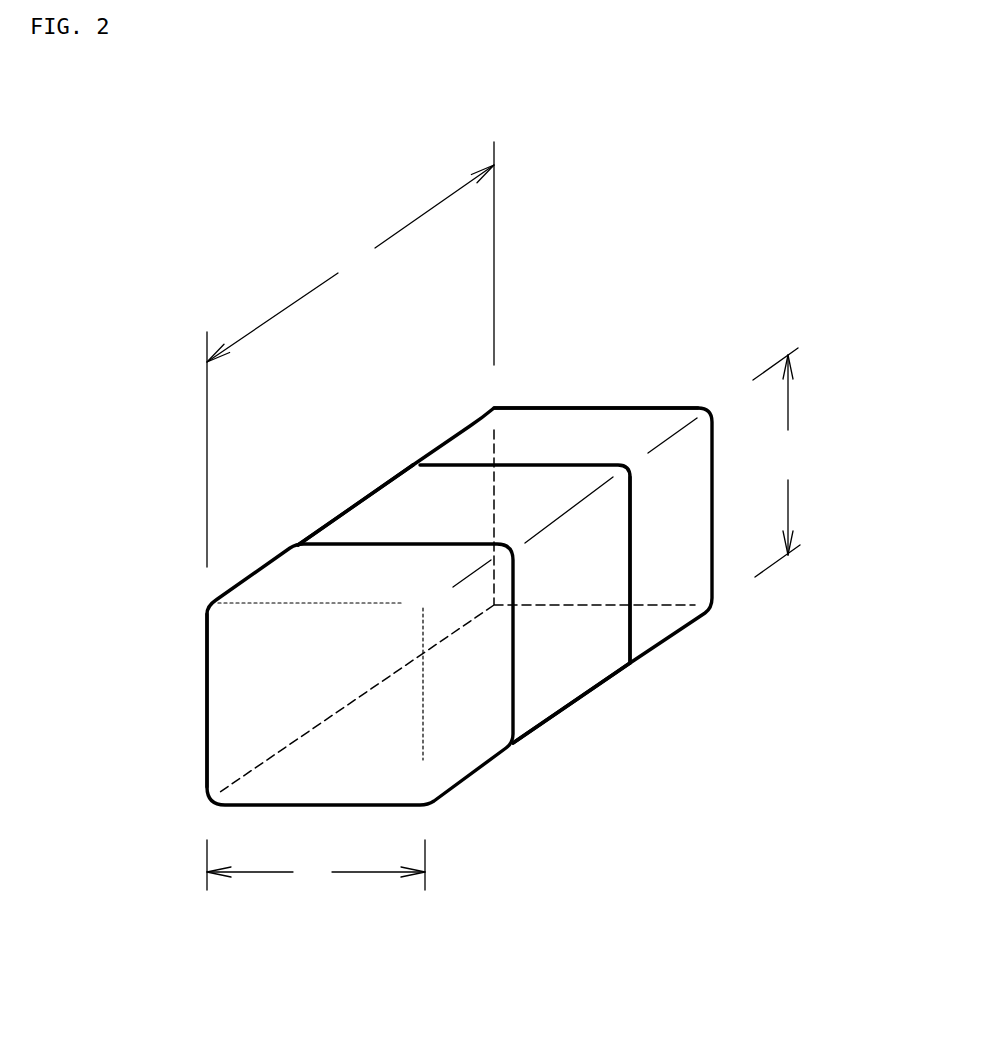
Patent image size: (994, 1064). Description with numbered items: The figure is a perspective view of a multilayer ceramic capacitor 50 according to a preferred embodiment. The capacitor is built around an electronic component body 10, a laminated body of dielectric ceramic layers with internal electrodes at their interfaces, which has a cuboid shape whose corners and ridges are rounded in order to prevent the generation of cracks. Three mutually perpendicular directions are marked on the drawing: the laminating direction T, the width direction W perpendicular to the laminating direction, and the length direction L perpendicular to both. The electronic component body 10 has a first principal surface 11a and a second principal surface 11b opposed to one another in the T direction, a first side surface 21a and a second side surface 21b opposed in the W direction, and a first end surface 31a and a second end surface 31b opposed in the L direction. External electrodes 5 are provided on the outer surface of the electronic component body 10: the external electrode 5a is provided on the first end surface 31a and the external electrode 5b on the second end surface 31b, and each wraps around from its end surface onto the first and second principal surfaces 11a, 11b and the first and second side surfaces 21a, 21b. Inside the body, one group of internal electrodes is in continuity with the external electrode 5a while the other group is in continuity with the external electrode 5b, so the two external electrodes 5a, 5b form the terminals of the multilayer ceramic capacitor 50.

The multilayer ceramic capacitor 50 is at (449, 557).
The electronic component body 10 is at (585, 690).
The external electrodes 5 is at (533, 660).
The external electrode 5a is at (448, 727).
The external electrode 5b is at (680, 553).
The first principal surface 11a is at (373, 530).
The second principal surface 11b is at (532, 688).
The first side surface 21a is at (413, 507).
The second side surface 21b is at (570, 623).
The first end surface 31a is at (260, 711).
The second end surface 31b is at (607, 445).
The length direction L is at (350, 354).
The laminating direction T is at (776, 462).
The width direction W is at (316, 865).